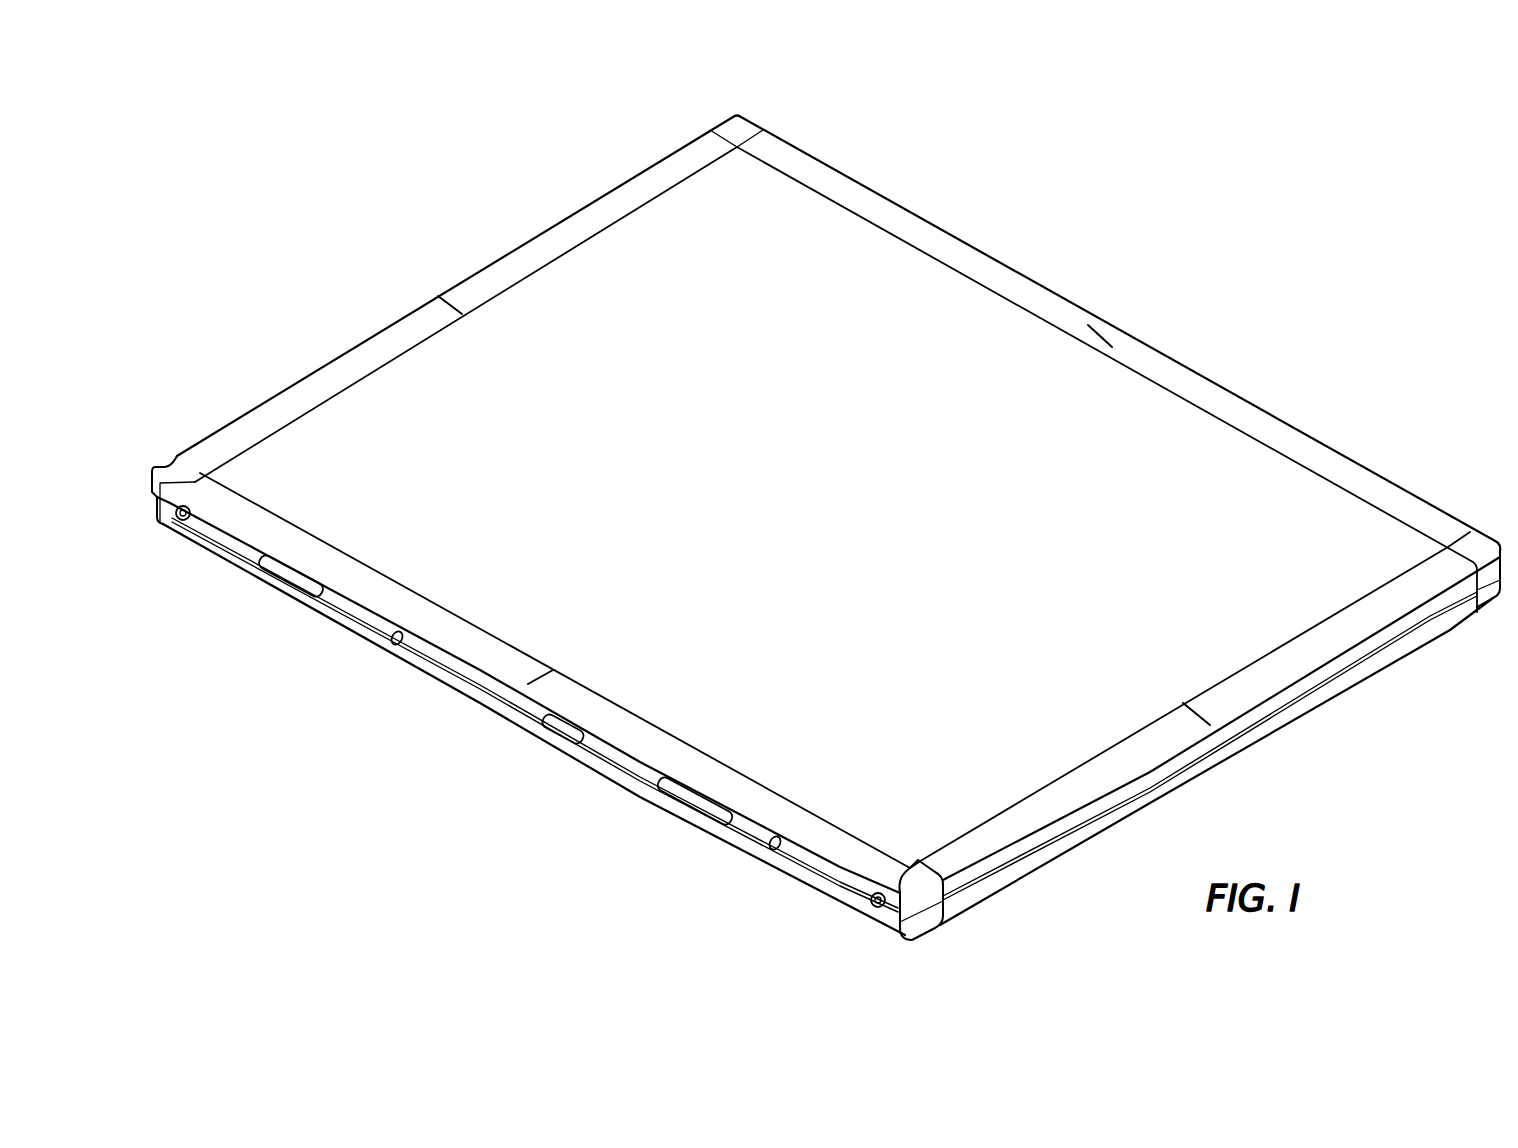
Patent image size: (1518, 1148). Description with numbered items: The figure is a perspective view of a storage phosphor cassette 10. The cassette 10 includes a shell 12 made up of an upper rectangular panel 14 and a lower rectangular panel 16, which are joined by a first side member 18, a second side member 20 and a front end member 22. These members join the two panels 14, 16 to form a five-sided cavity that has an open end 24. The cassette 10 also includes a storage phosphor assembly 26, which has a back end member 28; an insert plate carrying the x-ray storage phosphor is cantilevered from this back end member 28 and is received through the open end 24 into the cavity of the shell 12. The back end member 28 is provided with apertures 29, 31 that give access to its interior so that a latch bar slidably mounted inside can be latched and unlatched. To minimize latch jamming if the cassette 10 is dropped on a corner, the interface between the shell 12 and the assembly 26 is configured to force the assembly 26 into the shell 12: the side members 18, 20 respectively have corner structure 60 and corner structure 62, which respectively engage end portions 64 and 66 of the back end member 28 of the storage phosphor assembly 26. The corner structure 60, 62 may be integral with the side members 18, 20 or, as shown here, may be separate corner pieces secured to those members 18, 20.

The storage phosphor cassette 10 is at (1100, 248).
The shell 12 is at (839, 164).
The upper rectangular panel 14 is at (1223, 440).
The lower rectangular panel 16 is at (1052, 860).
The first side member 18 is at (400, 325).
The second side member 20 is at (1250, 698).
The front end member 22 is at (930, 232).
The open end 24 is at (733, 760).
The storage phosphor assembly 26 is at (782, 872).
The back end member 28 is at (836, 877).
The aperture 29 is at (288, 582).
The aperture 31 is at (563, 732).
The corner structure 60 is at (160, 478).
The corner structure 62 is at (930, 932).
The end portion 64 is at (165, 500).
The end portion 66 is at (905, 866).